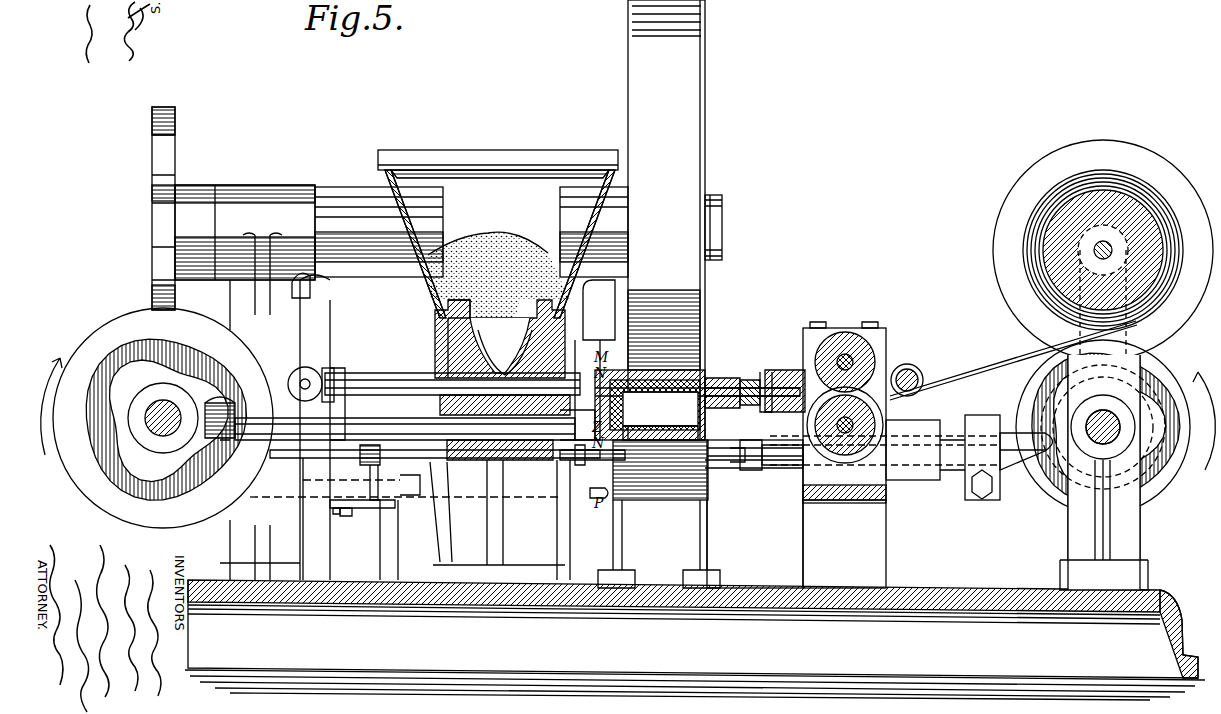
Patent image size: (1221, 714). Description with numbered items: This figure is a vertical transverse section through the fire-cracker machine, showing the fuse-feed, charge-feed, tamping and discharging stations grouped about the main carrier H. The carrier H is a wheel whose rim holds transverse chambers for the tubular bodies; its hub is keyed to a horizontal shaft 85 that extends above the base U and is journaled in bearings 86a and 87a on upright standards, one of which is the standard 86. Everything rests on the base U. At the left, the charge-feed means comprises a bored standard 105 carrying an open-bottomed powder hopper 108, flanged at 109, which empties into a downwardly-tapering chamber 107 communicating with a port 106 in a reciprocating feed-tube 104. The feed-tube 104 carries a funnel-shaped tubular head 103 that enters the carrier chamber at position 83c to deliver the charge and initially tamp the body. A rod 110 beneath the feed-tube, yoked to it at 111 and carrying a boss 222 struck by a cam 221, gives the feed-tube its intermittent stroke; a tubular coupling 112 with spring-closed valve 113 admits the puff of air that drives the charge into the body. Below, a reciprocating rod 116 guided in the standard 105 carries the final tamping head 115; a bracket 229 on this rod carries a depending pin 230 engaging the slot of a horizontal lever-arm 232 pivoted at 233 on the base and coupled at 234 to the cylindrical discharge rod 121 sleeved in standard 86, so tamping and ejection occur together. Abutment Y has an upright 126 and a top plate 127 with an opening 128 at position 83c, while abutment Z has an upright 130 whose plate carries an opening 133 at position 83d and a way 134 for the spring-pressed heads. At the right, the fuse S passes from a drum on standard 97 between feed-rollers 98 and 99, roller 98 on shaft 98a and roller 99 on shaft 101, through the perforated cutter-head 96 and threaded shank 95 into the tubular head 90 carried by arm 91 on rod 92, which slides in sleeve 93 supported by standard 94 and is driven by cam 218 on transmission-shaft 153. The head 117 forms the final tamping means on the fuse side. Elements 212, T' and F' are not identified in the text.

The standard 212 is at (178, 130).
The horizontal shaft 85 is at (340, 218).
The bearing 87a is at (312, 284).
The powder reservoir or hopper 108 is at (570, 160).
The tobacco material T' is at (499, 296).
The flange 109 is at (440, 312).
The port 106 is at (446, 318).
The downwardly-tapering chamber 107 is at (505, 349).
The feed-tube 104 is at (447, 345).
The bearing 86a is at (596, 290).
The upright standard 86 is at (585, 352).
The main carrier H is at (705, 128).
The feed screw F' is at (690, 328).
The transverse opening 133 is at (640, 395).
The way 134 is at (660, 418).
The upright 130 is at (622, 540).
The upright 126 is at (700, 548).
The standard 94 is at (880, 536).
The cylindrical elongated head 115 is at (600, 452).
The funnel-shaped tubular head 103 is at (591, 418).
The cylindrical rod 121 is at (598, 500).
The bored standard 105 is at (418, 362).
The tubular coupling 112 is at (306, 383).
The spring-closed valve 113 is at (330, 368).
The yoke 111 is at (345, 410).
The reciprocating rod 110 is at (410, 406).
The boss 222 is at (245, 393).
The bracket 229 is at (355, 460).
The depending pin 230 is at (390, 482).
The reciprocating rod 116 is at (428, 455).
The pivot 233 is at (395, 505).
The horizontal lever-arm 232 is at (350, 515).
The pin-and-slot engagement 234 is at (333, 510).
The top plate 127 is at (742, 410).
The transverse opening 128 is at (765, 372).
The chamber position 83c is at (715, 386).
The tubular threaded shank 95 is at (785, 372).
The elongated tubular reciprocating head 90 is at (762, 372).
The arm 91 is at (742, 455).
The cylindrical elongated head 117 is at (760, 468).
The chamber position 83d is at (703, 470).
The feed-roller 99 is at (840, 430).
The shaft 98a is at (850, 362).
The feed-roller 98 is at (860, 360).
The shaft 101 is at (860, 425).
The sleeve 93 is at (925, 425).
The reciprocating rod 92 is at (980, 465).
The fuse S is at (1010, 348).
The perforated cutter-head 96 is at (1190, 320).
The cam 218 is at (1045, 490).
The standard 97 is at (1140, 368).
The transmission-shaft 153 is at (1112, 436).
The cam 221 is at (102, 505).
The base U is at (695, 640).